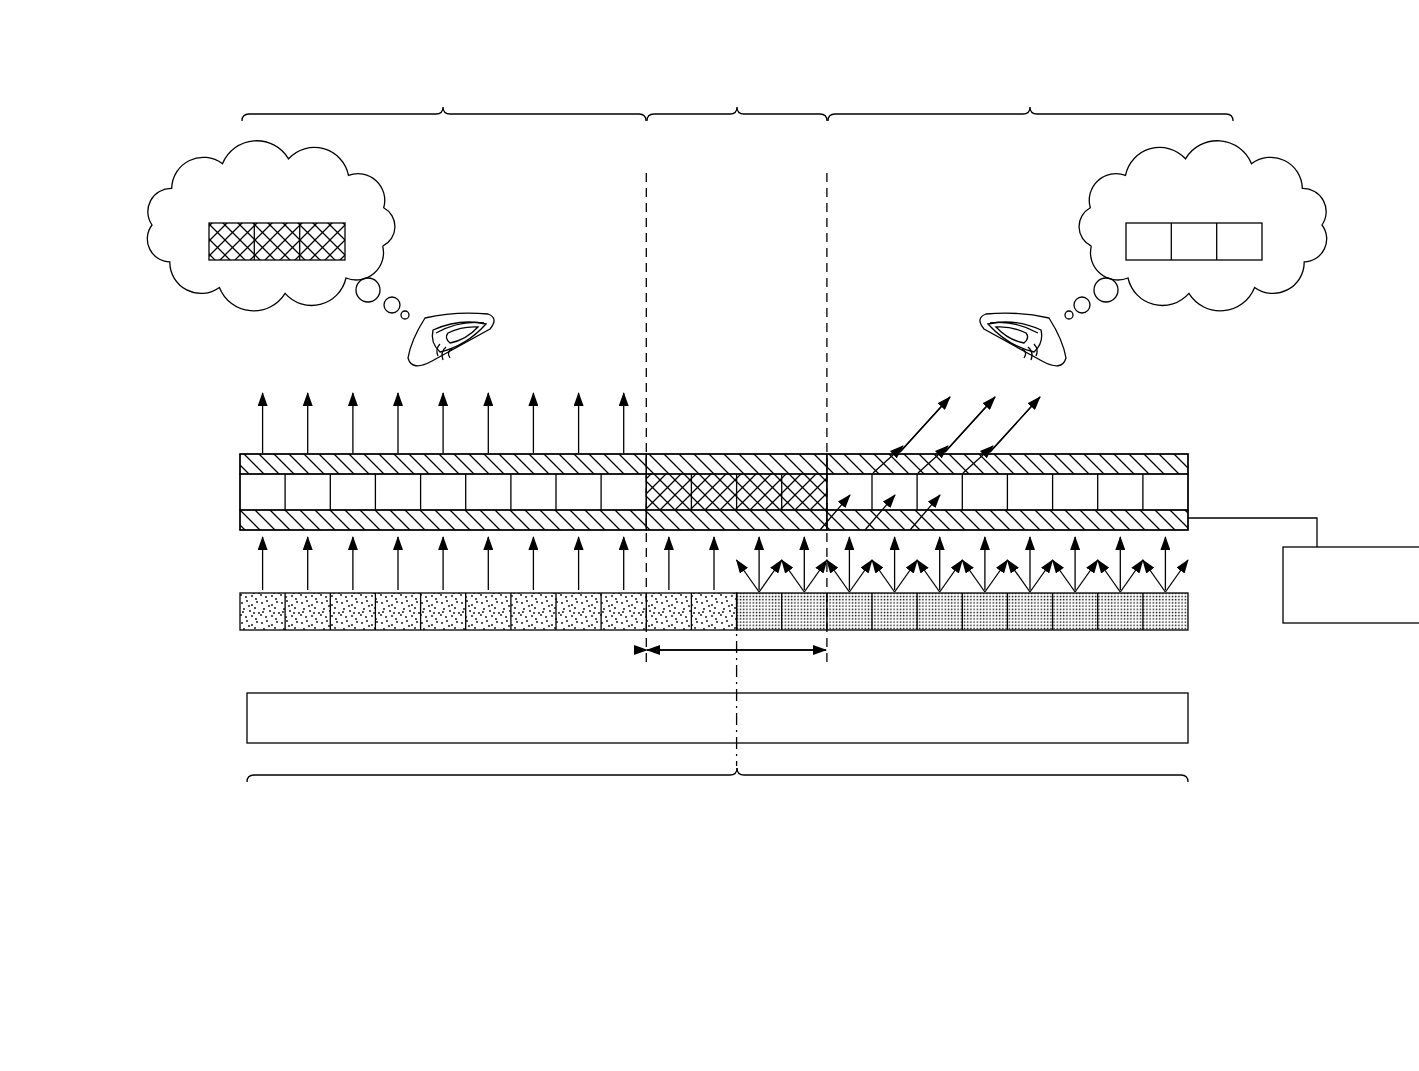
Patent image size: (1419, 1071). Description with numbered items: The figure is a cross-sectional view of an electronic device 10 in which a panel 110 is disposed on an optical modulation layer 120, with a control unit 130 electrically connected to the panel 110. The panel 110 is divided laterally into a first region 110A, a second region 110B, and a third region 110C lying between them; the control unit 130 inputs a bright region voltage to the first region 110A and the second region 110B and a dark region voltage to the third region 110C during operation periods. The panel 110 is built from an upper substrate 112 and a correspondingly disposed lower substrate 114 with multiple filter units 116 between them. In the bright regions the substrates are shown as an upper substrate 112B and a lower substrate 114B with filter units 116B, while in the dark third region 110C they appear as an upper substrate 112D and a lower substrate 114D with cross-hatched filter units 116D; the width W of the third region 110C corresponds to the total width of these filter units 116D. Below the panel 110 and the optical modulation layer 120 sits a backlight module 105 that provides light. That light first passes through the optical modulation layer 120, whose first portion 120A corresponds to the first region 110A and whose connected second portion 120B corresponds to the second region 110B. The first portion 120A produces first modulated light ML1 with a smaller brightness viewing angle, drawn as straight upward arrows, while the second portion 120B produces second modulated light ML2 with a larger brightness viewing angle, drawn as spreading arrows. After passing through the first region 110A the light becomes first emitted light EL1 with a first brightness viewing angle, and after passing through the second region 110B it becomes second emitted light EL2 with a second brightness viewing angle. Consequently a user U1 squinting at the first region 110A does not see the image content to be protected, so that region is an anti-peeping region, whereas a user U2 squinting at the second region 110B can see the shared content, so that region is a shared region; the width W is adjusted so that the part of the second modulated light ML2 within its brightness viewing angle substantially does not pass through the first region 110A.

The electronic device 10 is at (72, 94).
The panel 110 is at (210, 488).
The first region 110A is at (444, 96).
The second region 110B is at (1030, 96).
The third region 110C is at (736, 367).
The upper substrate 112 is at (1167, 466).
The upper substrate 112B is at (260, 470).
The upper substrate 112D is at (692, 470).
The lower substrate 114 is at (1167, 521).
The lower substrate 114B is at (260, 523).
The lower substrate 114D is at (693, 518).
The filter units 116 is at (1345, 333).
The filter units 116B is at (1167, 493).
The filter units 116D is at (760, 492).
The optical modulation layer 120 is at (210, 607).
The first portion 120A is at (488, 706).
The second portion 120B is at (962, 706).
The backlight module 105 is at (247, 717).
The control unit 130 is at (1378, 598).
The first emitted light EL1 is at (410, 423).
The second emitted light EL2 is at (930, 461).
The first modulated light ML1 is at (677, 563).
The second modulated light ML2 is at (1002, 575).
The user U1 is at (349, 253).
The user U2 is at (1153, 253).
The width W is at (736, 667).